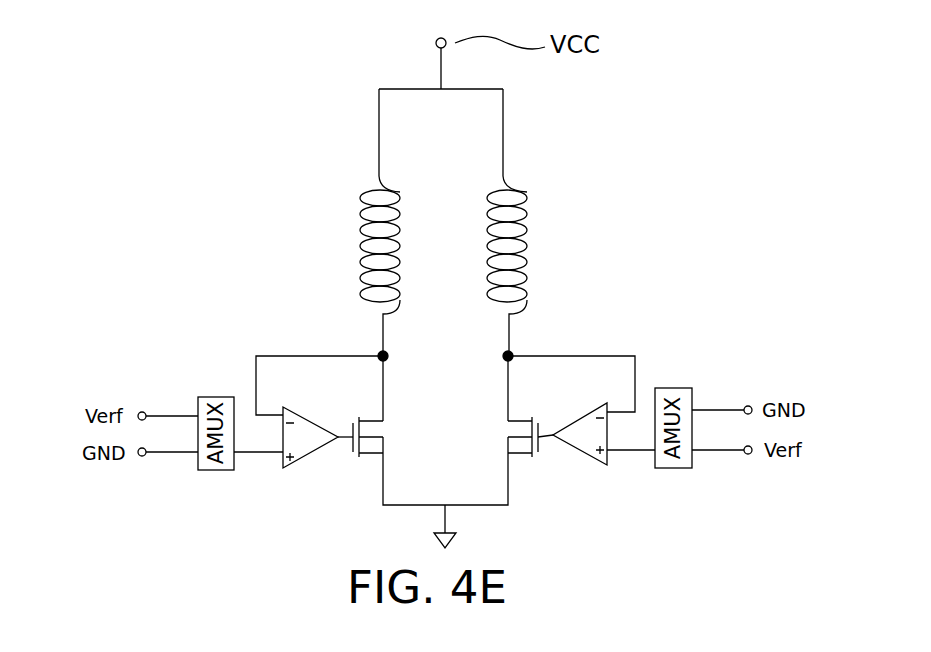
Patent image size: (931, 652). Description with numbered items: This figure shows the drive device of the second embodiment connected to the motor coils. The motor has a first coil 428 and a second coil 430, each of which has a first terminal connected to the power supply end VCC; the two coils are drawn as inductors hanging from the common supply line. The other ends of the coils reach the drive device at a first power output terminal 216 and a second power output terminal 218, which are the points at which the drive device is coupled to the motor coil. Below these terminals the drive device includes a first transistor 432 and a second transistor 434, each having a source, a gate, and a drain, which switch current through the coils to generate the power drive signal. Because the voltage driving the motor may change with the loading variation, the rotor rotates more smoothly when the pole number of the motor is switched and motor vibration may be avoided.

The first power output terminal 216 is at (385, 350).
The second power output terminal 218 is at (505, 362).
The first coil 428 is at (357, 246).
The second coil 430 is at (530, 244).
The first transistor 432 is at (343, 449).
The second transistor 434 is at (548, 449).